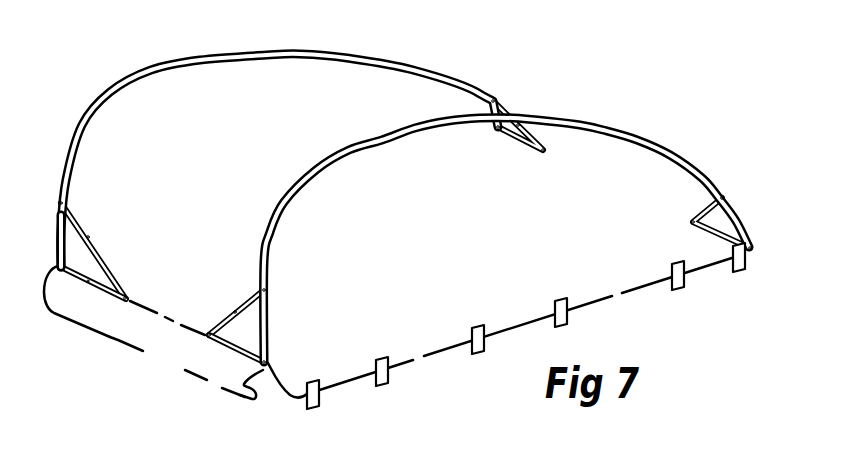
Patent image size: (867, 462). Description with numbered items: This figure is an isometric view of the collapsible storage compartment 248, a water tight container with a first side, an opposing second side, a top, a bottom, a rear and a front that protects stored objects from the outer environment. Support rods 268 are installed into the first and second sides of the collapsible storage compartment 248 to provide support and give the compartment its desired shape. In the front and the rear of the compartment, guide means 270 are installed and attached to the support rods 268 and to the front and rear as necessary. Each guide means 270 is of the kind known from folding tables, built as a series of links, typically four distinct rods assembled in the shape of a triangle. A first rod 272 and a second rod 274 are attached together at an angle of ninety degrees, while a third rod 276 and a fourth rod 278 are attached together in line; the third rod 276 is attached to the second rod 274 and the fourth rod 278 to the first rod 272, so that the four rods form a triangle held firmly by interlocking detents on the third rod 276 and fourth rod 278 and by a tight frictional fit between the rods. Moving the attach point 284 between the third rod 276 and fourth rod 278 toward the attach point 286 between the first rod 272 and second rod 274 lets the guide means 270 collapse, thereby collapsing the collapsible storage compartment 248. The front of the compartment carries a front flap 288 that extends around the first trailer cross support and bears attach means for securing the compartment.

The collapsible storage compartment 248 is at (658, 147).
The support rods 268 is at (400, 60).
The guide means 270 is at (514, 98).
The first rod 272 is at (89, 237).
The second rod 274 is at (122, 293).
The third rod 276 is at (87, 285).
The fourth rod 278 is at (58, 229).
The attach point 284 is at (57, 266).
The attach point 286 is at (235, 312).
The front flap 288 is at (168, 347).